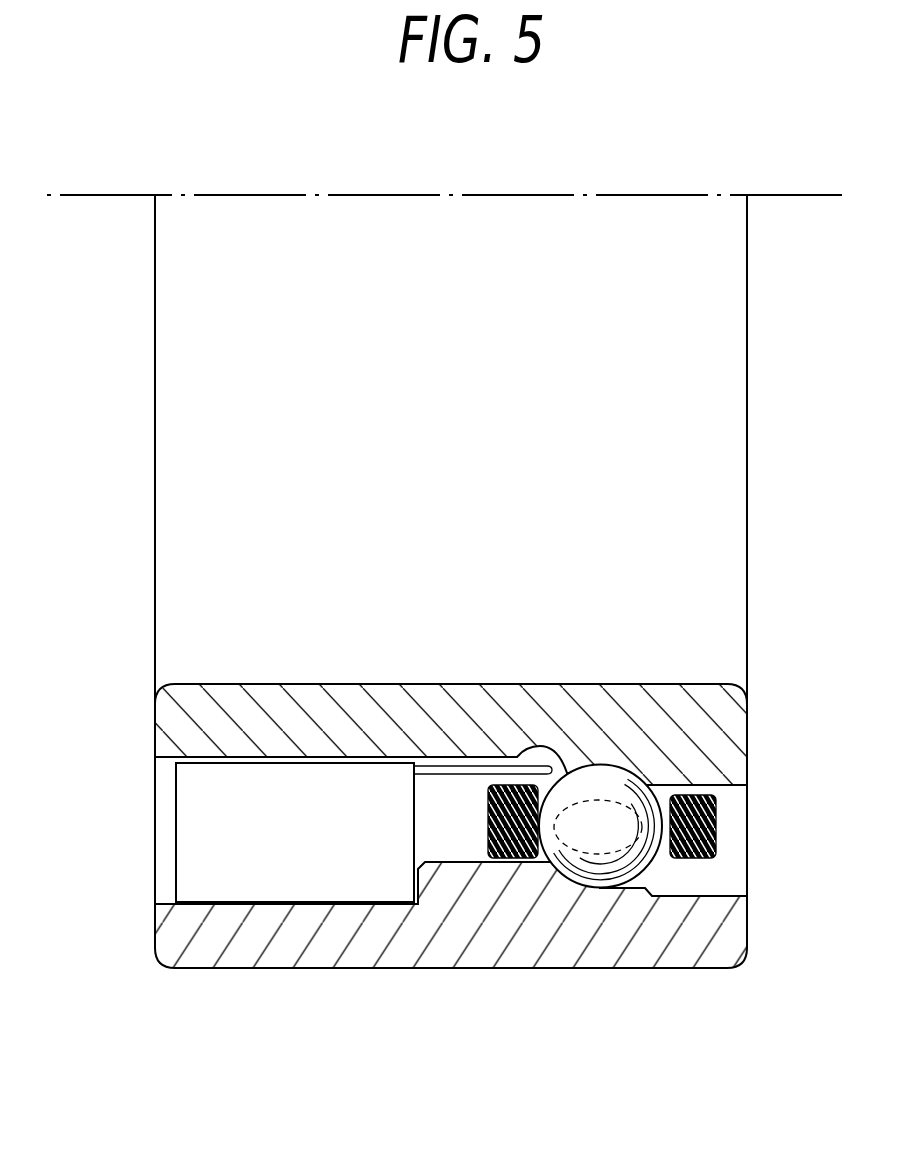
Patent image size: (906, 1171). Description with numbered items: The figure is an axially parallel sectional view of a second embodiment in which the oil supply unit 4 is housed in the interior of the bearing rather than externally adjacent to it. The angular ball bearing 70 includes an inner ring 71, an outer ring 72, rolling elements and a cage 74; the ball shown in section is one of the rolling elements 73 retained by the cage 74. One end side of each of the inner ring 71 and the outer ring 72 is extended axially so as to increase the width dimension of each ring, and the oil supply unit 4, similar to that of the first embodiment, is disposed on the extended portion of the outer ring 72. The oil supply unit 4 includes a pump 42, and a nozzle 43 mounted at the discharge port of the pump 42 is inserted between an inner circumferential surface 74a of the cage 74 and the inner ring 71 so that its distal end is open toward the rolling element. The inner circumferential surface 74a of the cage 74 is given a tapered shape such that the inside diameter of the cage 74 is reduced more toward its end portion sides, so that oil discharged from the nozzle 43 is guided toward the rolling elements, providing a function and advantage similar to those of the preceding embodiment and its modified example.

The oil supply unit 4 is at (128, 823).
The pump 42 is at (267, 877).
The nozzle 43 is at (477, 770).
The angular ball bearing 70 is at (489, 860).
The inner ring 71 is at (558, 717).
The outer ring 72 is at (613, 966).
The ball 73 is at (597, 852).
The cage 74 is at (716, 825).
The inner circumferential surface of the cage 74a is at (494, 861).